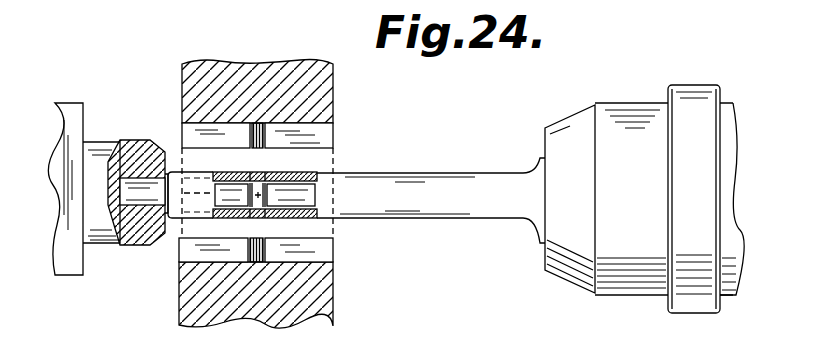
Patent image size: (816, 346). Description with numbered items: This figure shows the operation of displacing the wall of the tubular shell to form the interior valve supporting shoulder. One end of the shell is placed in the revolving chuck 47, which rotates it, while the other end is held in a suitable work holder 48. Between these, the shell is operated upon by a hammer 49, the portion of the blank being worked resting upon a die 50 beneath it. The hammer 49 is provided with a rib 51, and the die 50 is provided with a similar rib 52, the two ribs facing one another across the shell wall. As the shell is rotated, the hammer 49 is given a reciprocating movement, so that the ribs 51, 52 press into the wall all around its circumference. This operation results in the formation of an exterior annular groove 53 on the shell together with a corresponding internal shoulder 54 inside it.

The revolving chuck 47 is at (642, 115).
The work holder 48 is at (96, 142).
The hammer 49 is at (333, 117).
The die 50 is at (327, 300).
The rib 51 is at (303, 148).
The rib 52 is at (263, 240).
The exterior annular groove 53 is at (257, 172).
The internal shoulder 54 is at (231, 218).